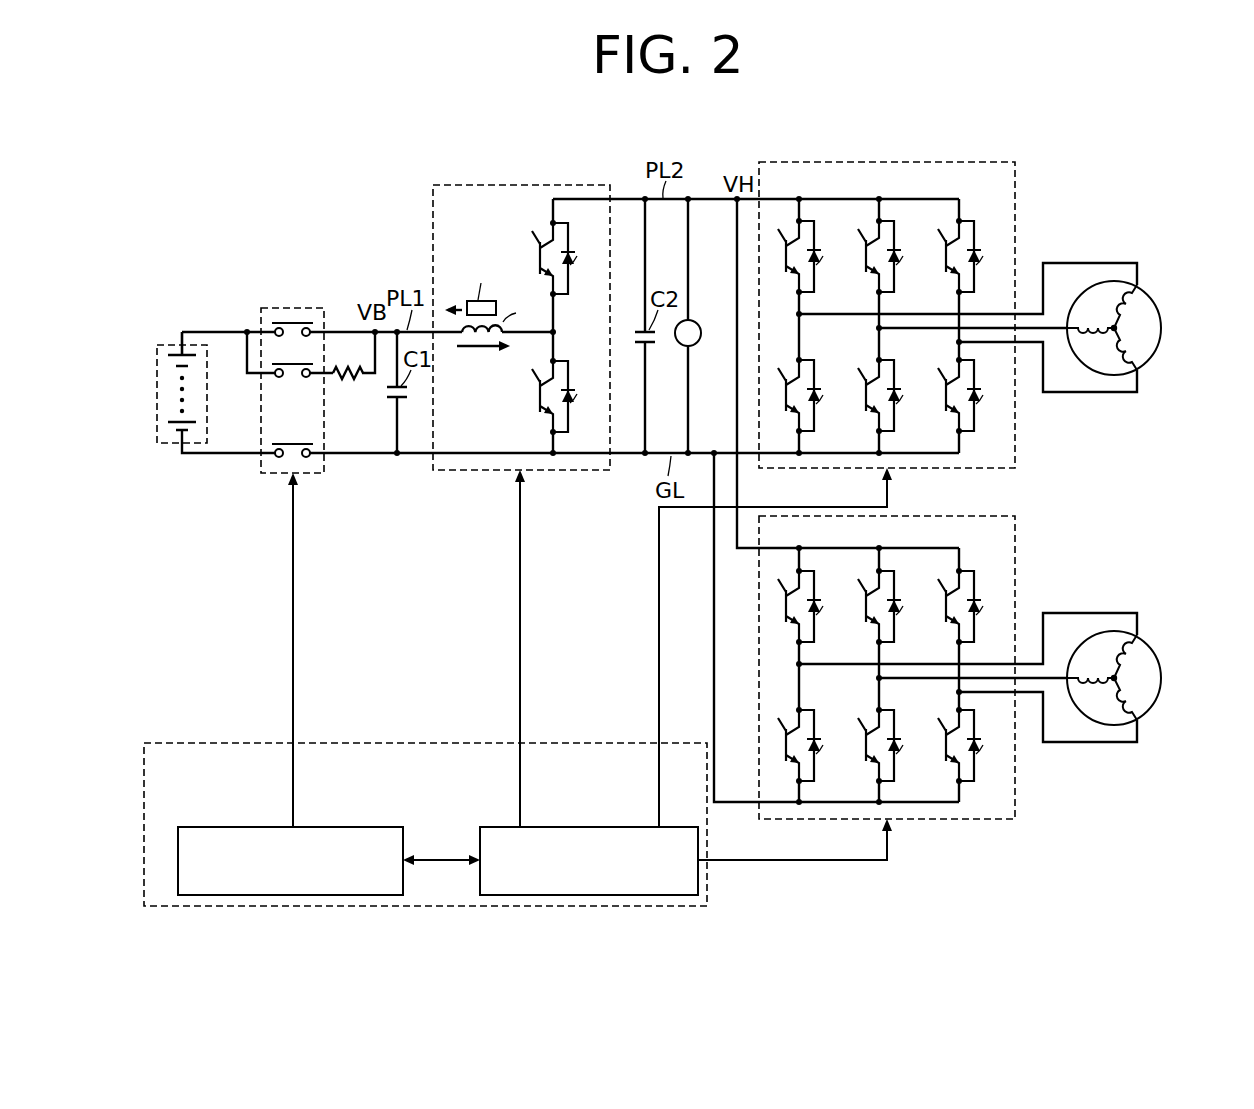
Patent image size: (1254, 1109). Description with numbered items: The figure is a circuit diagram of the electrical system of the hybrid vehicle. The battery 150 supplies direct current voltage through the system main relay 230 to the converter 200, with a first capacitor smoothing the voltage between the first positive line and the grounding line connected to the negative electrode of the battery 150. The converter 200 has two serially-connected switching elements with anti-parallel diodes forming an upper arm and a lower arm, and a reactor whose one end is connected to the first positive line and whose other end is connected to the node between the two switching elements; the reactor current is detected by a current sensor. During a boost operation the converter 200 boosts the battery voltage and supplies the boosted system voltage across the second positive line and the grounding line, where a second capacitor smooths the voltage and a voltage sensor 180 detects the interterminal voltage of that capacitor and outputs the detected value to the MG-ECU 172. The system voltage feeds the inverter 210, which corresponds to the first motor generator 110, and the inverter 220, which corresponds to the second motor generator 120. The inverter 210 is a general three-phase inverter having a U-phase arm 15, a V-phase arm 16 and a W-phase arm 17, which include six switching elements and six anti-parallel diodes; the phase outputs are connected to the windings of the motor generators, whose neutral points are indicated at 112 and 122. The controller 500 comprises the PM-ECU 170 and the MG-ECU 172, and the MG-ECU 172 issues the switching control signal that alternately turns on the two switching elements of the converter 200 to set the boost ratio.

The battery 150 is at (171, 345).
The system main relay 230 is at (296, 308).
The converter 200 is at (570, 186).
The voltage sensor 180 is at (701, 326).
The inverter 210 is at (973, 163).
The inverter 220 is at (973, 513).
The U-phase arm 15 is at (813, 191).
The V-phase arm 16 is at (893, 191).
The W-phase arm 17 is at (973, 191).
The first motor generator 110 is at (1140, 300).
The second motor generator 120 is at (1140, 650).
The neutral point of first motor generator 112 is at (1113, 326).
The neutral point of second motor generator 122 is at (1113, 676).
The controller 500 is at (518, 687).
The power management electronic control unit 170 is at (347, 827).
The motor generator electronic control unit 172 is at (585, 827).